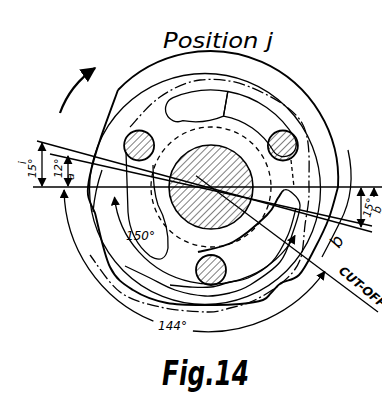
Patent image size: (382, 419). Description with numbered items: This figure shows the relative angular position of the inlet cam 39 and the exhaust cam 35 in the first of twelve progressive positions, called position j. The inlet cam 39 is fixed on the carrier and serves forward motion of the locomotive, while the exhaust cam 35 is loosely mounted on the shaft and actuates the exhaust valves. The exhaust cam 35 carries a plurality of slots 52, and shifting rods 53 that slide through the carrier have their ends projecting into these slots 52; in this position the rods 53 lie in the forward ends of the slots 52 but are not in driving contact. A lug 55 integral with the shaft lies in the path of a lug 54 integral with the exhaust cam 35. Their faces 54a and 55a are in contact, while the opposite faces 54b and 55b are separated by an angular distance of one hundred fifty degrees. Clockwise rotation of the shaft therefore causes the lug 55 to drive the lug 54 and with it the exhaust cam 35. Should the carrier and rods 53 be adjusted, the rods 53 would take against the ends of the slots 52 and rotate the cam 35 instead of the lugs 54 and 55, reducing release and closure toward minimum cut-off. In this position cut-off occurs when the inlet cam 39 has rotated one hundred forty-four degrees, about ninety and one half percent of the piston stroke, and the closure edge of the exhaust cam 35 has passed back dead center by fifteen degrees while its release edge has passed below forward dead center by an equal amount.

The exhaust cam 35 is at (315, 101).
The inlet cam 39 is at (113, 273).
The slots 52 is at (208, 97).
The shifting rods 53 is at (298, 148).
The lug 54 is at (293, 172).
The face of lug 54 54a is at (230, 118).
The opposite face of lug 54 54b is at (268, 225).
The lug 55 is at (146, 132).
The face of lug 55 55a is at (226, 113).
The opposite face of lug 55 55b is at (140, 194).